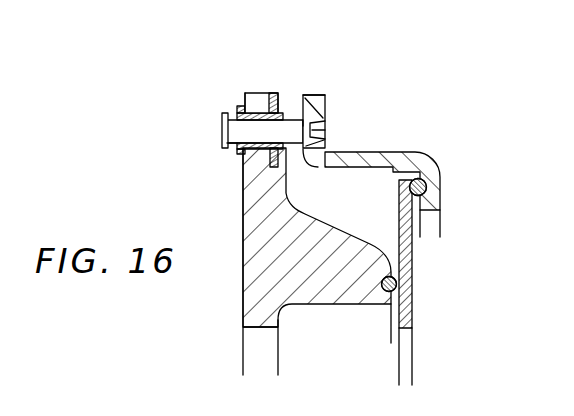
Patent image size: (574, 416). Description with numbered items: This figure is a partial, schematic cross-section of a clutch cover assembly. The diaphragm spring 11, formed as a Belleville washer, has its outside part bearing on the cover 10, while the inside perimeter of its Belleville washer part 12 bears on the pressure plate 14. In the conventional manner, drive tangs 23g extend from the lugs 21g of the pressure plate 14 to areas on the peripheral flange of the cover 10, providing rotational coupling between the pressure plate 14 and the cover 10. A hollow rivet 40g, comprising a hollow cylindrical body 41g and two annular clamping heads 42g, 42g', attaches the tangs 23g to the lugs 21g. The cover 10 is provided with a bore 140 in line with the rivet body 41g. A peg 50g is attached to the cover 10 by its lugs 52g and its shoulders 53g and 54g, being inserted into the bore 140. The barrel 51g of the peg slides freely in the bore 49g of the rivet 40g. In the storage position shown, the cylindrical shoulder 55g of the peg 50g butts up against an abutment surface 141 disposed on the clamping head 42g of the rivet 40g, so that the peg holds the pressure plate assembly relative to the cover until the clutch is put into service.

The cover 10 is at (446, 165).
The diaphragm spring 11 is at (421, 297).
The Belleville washer part 12 is at (413, 247).
The pressure plate 14 is at (259, 84).
The lug 21g is at (243, 92).
The drive tang 23g is at (273, 93).
The hollow rivet 40g is at (238, 160).
The hollow cylindrical body 41g is at (266, 167).
The annular clamping head 42g is at (240, 94).
The annular clamping head 42g' is at (317, 95).
The bore 49g is at (258, 137).
The peg 50g is at (219, 109).
The barrel 51g is at (227, 134).
The lugs 52g is at (322, 130).
The shoulder 53g is at (313, 108).
The shoulder 54g is at (313, 150).
The cylindrical shoulder 55g is at (222, 125).
The bore 140 is at (324, 96).
The abutment surface 141 is at (238, 150).